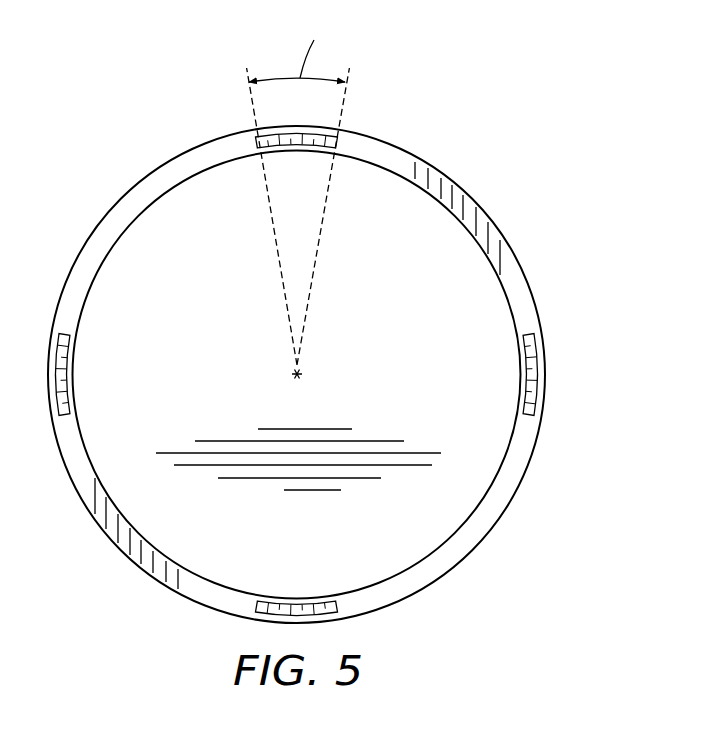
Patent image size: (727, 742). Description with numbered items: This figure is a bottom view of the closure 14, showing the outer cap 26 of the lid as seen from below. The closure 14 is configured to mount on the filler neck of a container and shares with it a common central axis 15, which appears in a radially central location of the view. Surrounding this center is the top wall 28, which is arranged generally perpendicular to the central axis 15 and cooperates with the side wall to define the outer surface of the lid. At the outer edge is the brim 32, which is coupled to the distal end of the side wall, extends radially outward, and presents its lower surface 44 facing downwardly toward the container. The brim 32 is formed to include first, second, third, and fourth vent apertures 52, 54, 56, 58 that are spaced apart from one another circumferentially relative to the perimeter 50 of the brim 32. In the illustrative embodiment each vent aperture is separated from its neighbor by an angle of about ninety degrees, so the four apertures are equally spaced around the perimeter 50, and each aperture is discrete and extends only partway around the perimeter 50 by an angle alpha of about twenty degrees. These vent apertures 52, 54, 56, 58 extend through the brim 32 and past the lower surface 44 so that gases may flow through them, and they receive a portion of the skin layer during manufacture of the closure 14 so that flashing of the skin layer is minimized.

The closure 14 is at (352, 317).
The central axis 15 is at (306, 372).
The outer cap 26 is at (128, 560).
The top wall 28 is at (441, 401).
The brim 32 is at (510, 236).
The lower surface 44 is at (507, 492).
The perimeter 50 is at (365, 347).
The first vent aperture 52 is at (302, 130).
The second vent aperture 54 is at (542, 373).
The third vent aperture 56 is at (292, 605).
The fourth vent aperture 58 is at (68, 382).